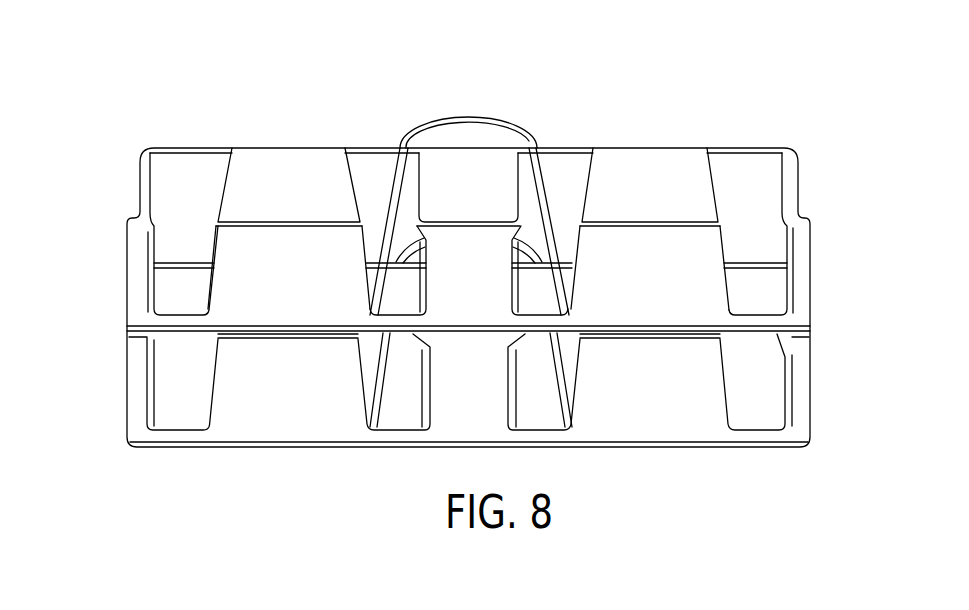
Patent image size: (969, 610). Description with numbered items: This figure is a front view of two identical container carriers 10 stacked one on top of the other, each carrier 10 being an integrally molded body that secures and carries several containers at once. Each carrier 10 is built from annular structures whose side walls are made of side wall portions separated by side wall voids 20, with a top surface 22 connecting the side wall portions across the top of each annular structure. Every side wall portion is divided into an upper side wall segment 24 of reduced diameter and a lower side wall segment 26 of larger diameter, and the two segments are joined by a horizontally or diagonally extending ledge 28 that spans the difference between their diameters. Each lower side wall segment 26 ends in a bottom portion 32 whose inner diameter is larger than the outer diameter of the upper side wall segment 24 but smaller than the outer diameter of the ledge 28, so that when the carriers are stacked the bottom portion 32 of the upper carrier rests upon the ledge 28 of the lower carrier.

The container carrier 10 is at (802, 75).
The side wall void 20 is at (772, 387).
The top surface 22 is at (680, 150).
The upper side wall segment 24 is at (152, 191).
The lower side wall segment 26 is at (135, 283).
The ledge 28 is at (252, 338).
The bottom portion 32 is at (195, 333).